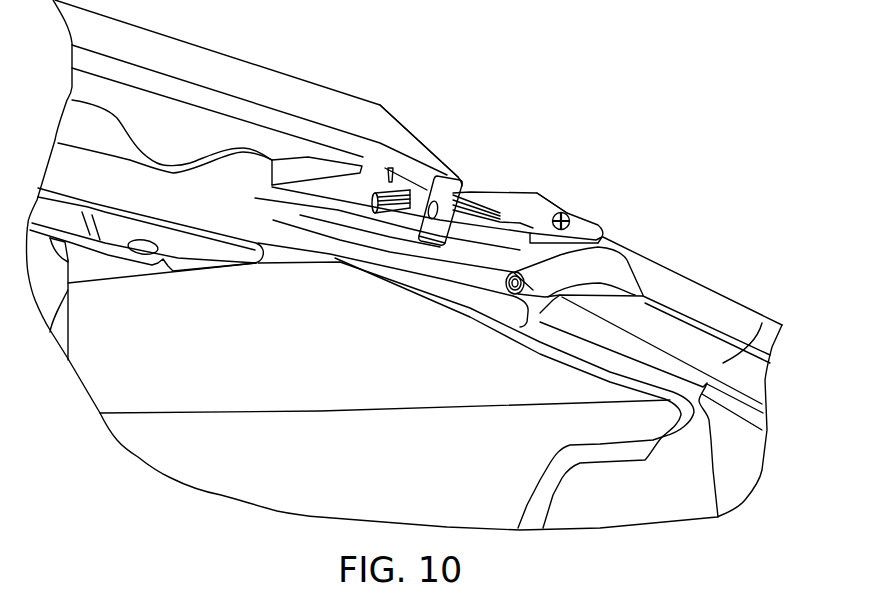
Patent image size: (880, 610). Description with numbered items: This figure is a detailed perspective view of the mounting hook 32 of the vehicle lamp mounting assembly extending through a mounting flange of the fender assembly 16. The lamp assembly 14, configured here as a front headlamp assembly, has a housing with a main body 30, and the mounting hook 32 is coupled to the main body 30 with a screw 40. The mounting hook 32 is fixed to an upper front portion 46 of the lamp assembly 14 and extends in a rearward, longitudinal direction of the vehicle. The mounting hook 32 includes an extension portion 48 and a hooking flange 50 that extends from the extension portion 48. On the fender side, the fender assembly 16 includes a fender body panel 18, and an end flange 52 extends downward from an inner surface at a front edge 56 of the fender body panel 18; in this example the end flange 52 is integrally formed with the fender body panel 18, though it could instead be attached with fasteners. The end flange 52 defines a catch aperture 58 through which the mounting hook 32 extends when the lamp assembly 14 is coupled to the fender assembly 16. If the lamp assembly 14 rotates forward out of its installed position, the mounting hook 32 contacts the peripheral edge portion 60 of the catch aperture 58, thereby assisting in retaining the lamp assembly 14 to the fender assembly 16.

The lamp assembly 14 is at (726, 283).
The fender assembly 16 is at (380, 120).
The fender body panel 18 is at (247, 62).
The main body 30 is at (762, 323).
The mounting hook 32 is at (463, 184).
The screw 40 is at (566, 214).
The upper front portion 46 is at (630, 256).
The extension portion 48 is at (388, 207).
The hooking flange 50 is at (375, 205).
The end flange 52 is at (428, 226).
The front edge 56 is at (418, 132).
The catch aperture 58 is at (431, 183).
The peripheral edge portion 60 is at (393, 210).